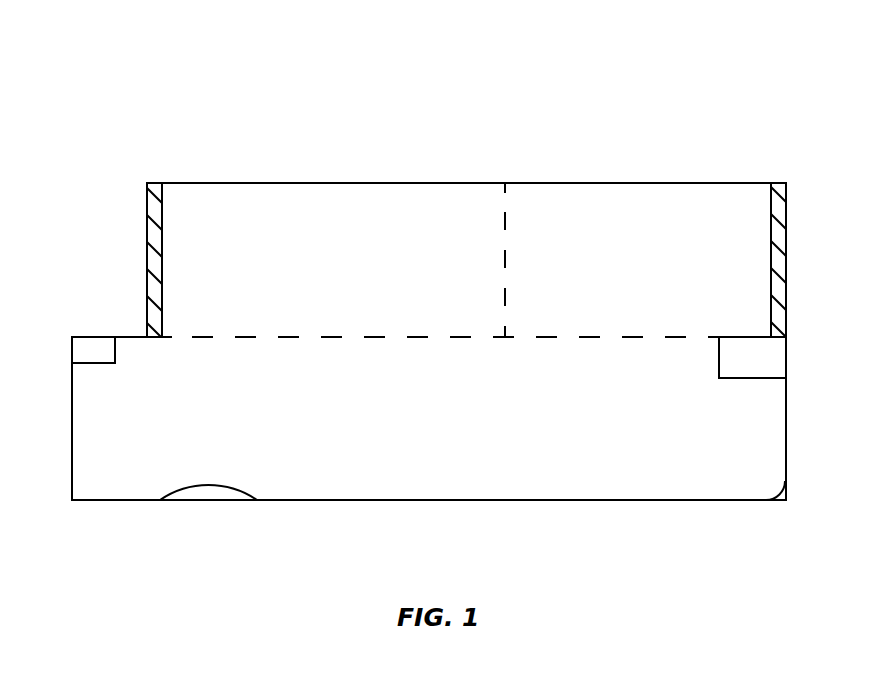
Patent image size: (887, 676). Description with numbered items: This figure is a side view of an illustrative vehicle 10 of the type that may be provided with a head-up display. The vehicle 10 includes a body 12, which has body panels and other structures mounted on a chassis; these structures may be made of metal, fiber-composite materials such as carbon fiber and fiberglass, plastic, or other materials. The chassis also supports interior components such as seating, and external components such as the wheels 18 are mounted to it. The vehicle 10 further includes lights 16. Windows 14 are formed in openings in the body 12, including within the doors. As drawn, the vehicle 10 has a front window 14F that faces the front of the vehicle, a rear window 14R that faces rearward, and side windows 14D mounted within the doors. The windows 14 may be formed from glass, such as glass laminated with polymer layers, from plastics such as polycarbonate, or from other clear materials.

The vehicle 10 is at (602, 83).
The body 12 is at (380, 493).
The windows 14 is at (110, 210).
The front window 14F is at (140, 183).
The rear window 14R is at (797, 183).
The side windows 14D is at (530, 325).
The lights 16 is at (80, 352).
The wheels 18 is at (212, 495).